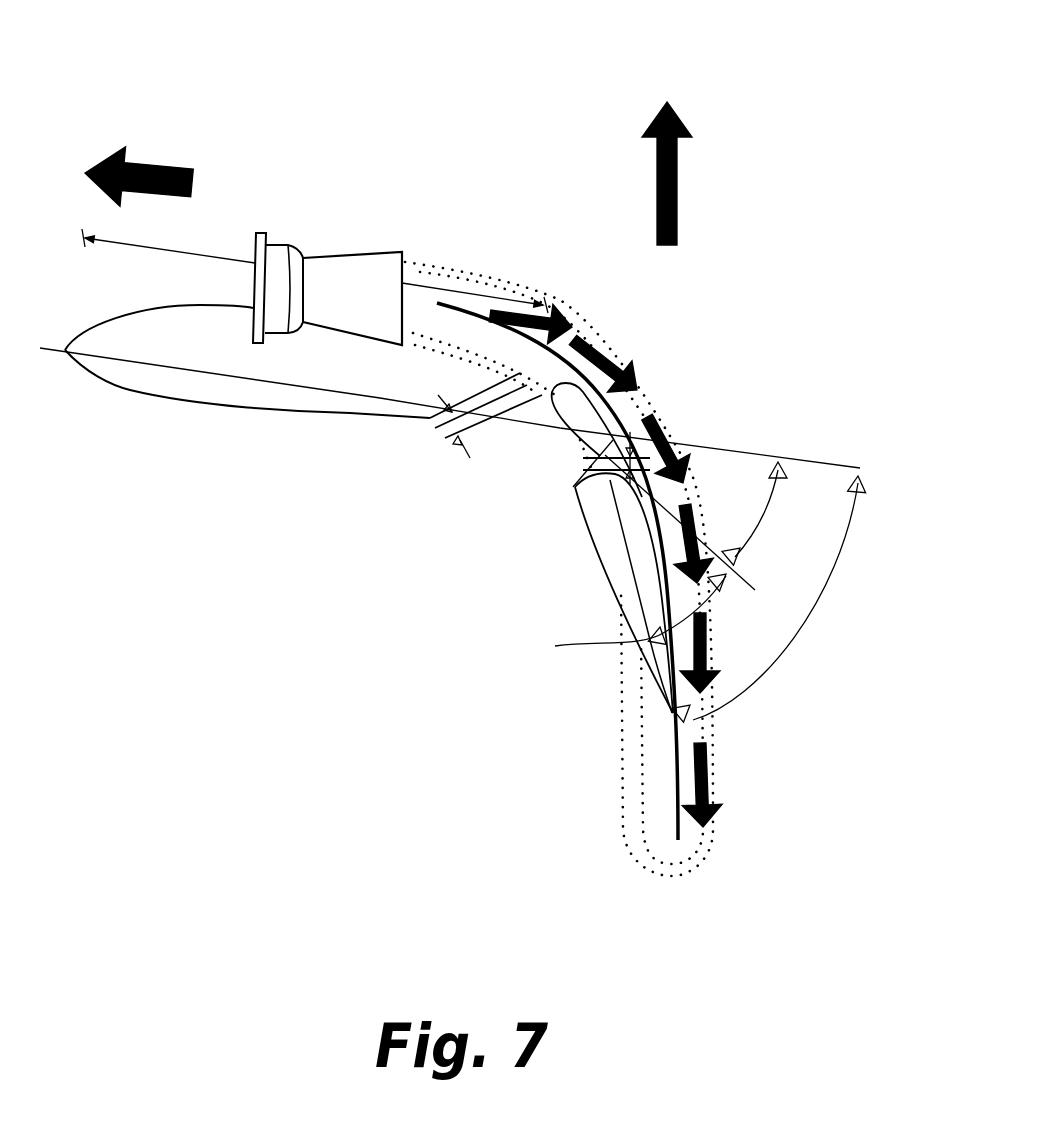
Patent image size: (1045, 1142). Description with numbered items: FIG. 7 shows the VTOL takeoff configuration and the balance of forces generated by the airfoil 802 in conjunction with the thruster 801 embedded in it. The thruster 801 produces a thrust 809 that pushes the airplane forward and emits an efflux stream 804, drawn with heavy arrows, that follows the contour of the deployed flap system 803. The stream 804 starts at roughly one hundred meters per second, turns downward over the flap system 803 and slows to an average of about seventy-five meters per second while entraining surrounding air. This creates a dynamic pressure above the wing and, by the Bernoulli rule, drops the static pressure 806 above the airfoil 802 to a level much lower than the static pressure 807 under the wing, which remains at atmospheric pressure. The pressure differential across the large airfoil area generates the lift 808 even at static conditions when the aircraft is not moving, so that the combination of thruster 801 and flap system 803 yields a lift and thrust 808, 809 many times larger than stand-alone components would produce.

The thruster 801 is at (333, 262).
The airfoil 802 is at (127, 387).
The flap system 803 is at (637, 608).
The efflux stream 804 is at (630, 363).
The static pressure above the wing 806 is at (765, 222).
The static pressure under the wing 807 is at (393, 533).
The lift generation 808 is at (682, 120).
The thrust 809 is at (105, 152).